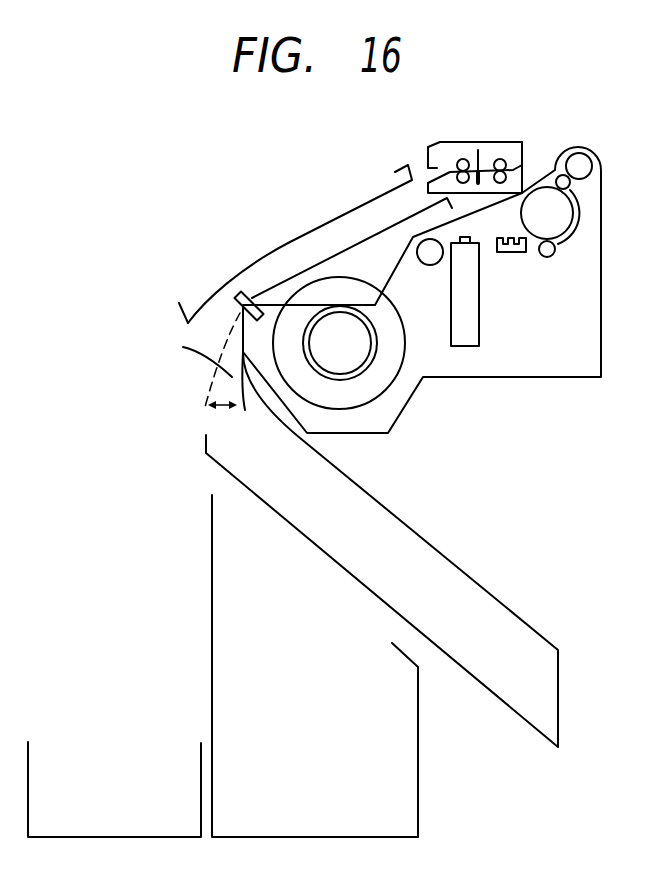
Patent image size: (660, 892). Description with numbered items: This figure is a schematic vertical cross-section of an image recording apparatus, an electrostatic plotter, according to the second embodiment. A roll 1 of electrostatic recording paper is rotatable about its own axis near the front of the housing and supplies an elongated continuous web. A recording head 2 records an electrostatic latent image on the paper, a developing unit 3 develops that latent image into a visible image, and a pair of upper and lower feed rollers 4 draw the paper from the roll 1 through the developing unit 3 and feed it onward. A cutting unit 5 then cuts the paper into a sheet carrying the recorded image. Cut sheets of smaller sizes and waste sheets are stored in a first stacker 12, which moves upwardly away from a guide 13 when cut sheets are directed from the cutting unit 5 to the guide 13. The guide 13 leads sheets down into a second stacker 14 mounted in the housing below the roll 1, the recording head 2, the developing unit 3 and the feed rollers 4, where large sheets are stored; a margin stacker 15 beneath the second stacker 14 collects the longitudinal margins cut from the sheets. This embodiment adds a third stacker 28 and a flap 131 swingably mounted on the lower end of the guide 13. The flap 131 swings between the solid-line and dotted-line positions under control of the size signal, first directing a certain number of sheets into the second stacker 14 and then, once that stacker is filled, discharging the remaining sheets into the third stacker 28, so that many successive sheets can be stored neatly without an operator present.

The roll 1 is at (380, 383).
The recording head 2 is at (467, 338).
The developing unit 3 is at (512, 252).
The feed rollers 4 is at (558, 213).
The cutting unit 5 is at (488, 140).
The first stacker 12 is at (180, 307).
The guide 13 is at (363, 238).
The flap 131 is at (237, 373).
The second stacker 14 is at (490, 593).
The margin stacker 15 is at (417, 742).
The third stacker 28 is at (30, 770).